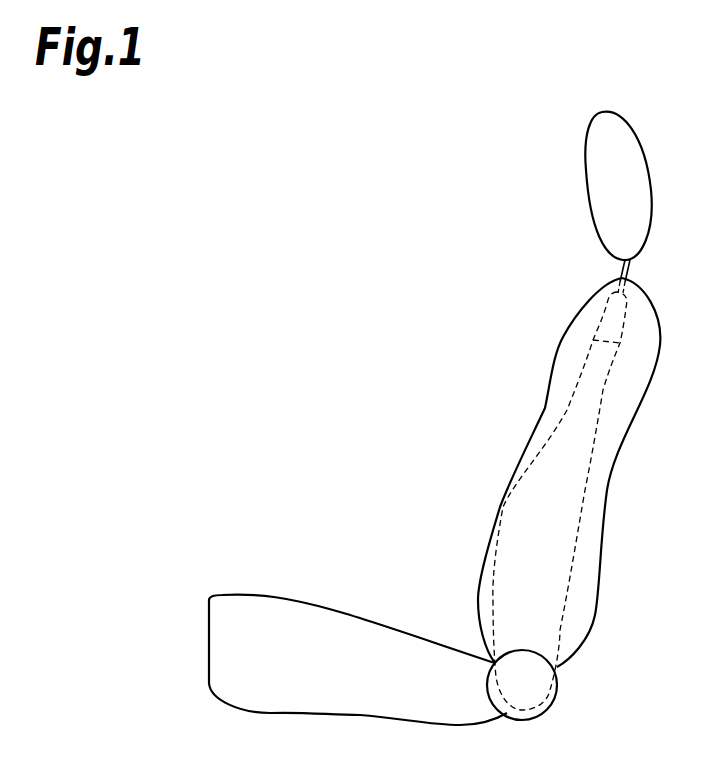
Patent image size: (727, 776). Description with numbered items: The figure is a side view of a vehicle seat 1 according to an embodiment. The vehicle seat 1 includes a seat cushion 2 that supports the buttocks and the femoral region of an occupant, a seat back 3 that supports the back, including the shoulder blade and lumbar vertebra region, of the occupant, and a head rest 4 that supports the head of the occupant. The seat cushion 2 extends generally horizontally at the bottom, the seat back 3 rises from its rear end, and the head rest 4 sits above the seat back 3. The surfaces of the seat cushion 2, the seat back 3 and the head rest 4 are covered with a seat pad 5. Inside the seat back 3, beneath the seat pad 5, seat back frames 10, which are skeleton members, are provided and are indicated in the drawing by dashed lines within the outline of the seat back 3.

The vehicle seat 1 is at (350, 266).
The seat cushion 2 is at (287, 600).
The seat back 3 is at (563, 334).
The head rest 4 is at (586, 178).
The seat pad 5 is at (490, 532).
The seat back frames 10 is at (532, 467).